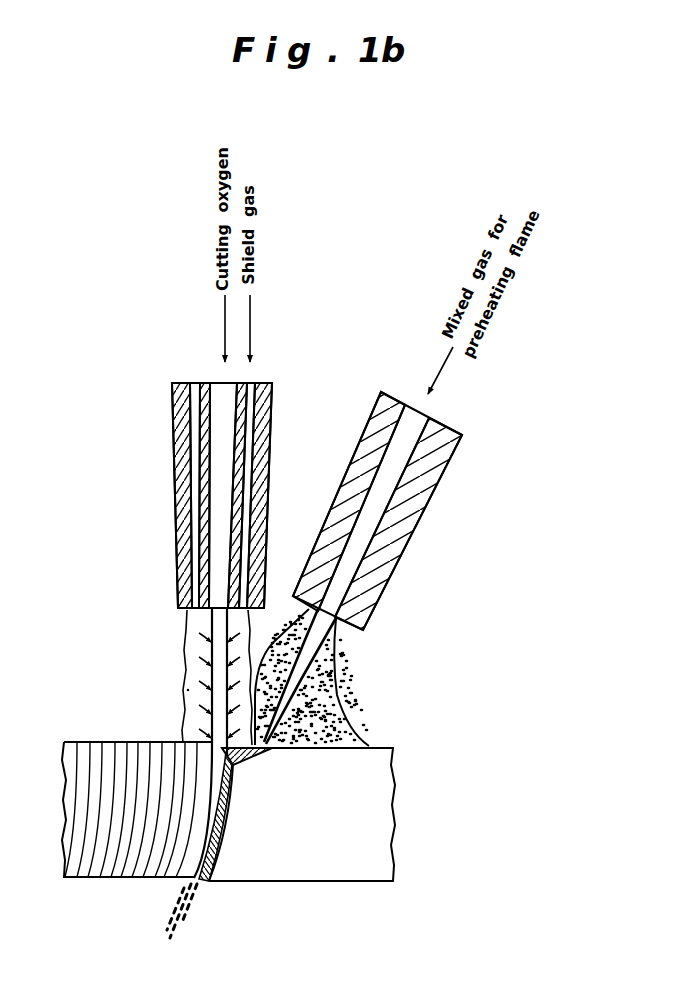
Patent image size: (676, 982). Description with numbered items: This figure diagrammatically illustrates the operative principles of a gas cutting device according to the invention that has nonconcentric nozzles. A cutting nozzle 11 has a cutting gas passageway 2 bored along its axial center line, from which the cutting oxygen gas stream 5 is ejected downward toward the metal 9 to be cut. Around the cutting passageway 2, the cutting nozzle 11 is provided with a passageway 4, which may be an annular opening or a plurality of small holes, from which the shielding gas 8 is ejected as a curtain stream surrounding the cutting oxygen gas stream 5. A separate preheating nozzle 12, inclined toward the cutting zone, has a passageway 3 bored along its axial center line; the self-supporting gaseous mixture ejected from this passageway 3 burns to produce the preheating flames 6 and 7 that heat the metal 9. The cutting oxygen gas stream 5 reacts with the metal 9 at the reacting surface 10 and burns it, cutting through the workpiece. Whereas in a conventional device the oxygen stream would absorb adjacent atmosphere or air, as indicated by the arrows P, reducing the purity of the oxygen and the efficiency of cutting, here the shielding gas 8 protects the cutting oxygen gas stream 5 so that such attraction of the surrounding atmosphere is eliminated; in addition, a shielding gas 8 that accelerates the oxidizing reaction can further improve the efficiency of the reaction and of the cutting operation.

The cutting nozzle 11 is at (244, 491).
The cutting gas passageway 2 is at (225, 435).
The passageway 4 is at (248, 471).
The preheating nozzle 12 is at (394, 511).
The preheating gas passageway 3 is at (385, 485).
The cutting oxygen gas stream 5 is at (213, 651).
The shielding gas 8 is at (188, 707).
The preheating flame 6 is at (317, 677).
The preheating flame 7 is at (263, 700).
The metal to be cut 9 is at (243, 839).
The reacting surface 10 is at (223, 828).
The arrows P is at (188, 680).